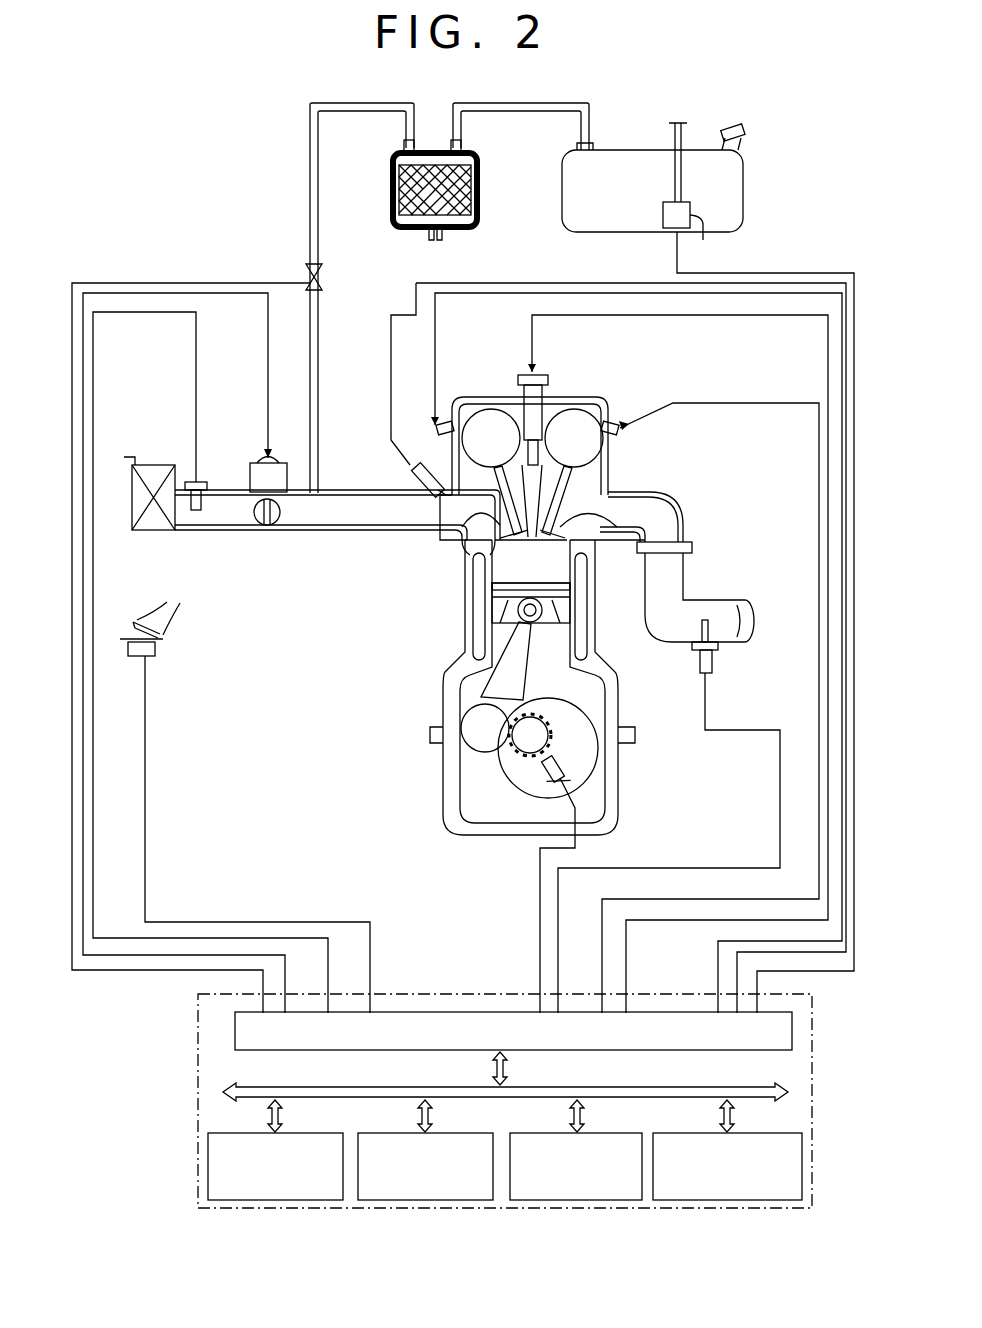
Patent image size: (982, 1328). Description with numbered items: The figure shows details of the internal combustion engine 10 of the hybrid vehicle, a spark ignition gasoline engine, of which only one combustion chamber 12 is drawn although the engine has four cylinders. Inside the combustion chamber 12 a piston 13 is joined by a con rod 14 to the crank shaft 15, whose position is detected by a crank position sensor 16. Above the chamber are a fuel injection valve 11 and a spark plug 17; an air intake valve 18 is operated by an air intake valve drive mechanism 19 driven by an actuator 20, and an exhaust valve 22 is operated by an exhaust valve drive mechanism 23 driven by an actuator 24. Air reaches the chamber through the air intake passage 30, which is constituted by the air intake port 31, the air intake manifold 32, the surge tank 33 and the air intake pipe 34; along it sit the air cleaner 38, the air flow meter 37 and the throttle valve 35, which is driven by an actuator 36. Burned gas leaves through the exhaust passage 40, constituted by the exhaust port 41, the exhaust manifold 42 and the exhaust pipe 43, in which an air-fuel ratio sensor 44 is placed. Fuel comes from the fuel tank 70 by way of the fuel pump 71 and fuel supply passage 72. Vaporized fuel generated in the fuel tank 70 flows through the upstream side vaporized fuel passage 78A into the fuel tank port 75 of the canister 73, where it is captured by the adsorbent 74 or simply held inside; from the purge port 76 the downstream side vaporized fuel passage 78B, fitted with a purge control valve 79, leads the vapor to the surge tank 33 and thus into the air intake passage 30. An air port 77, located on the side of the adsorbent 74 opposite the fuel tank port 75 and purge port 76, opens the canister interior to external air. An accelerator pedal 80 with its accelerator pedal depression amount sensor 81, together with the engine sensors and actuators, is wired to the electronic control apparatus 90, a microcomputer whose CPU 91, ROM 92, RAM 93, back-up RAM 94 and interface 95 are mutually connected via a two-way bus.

The internal combustion engine 10 is at (660, 748).
The fuel injection valve 11 is at (415, 478).
The combustion chamber 12 is at (521, 573).
The piston 13 is at (565, 610).
The con rod 14 is at (530, 657).
The crank shaft 15 is at (533, 735).
The crank position sensor 16 is at (563, 775).
The spark plug 17 is at (585, 490).
The air intake valve 18 is at (470, 555).
The air intake valve drive mechanism 19 is at (518, 385).
The actuator for driving the air intake valve drive mechanism 20 is at (445, 433).
The exhaust valve 22 is at (552, 555).
The exhaust valve drive mechanism 23 is at (572, 400).
The actuator for driving the exhaust valve drive mechanism 24 is at (614, 432).
The air intake passage 30 is at (384, 402).
The air intake port 31 is at (465, 522).
The air intake manifold 32 is at (400, 530).
The surge tank 33 is at (340, 530).
The air intake pipe 34 is at (190, 530).
The throttle valve 35 is at (280, 528).
The actuator for driving a throttle valve 36 is at (260, 460).
The air flow meter 37 is at (199, 482).
The air cleaner 38 is at (150, 530).
The exhaust passage 40 is at (738, 480).
The exhaust port 41 is at (608, 527).
The exhaust manifold 42 is at (680, 512).
The exhaust pipe 43 is at (690, 582).
The air-fuel ratio sensor 44 is at (712, 668).
The fuel tank 70 is at (743, 197).
The fuel pump 71 is at (703, 241).
The fuel supply passage 72 is at (668, 139).
The canister 73 is at (478, 225).
The adsorbent 74 is at (478, 190).
The fuel tank port 75 is at (463, 150).
The purge port 76 is at (404, 148).
The air port 77 is at (430, 236).
The upstream side vaporized fuel passage 78A is at (589, 108).
The downstream side vaporized fuel passage 78B is at (310, 174).
The purge control valve 79 is at (308, 276).
The accelerator pedal 80 is at (135, 622).
The accelerator pedal depression amount sensor 81 is at (158, 650).
The electronic control apparatus 90 is at (198, 1182).
The microprocessor (CPU) 91 is at (312, 1133).
The read-only memory (ROM) 92 is at (464, 1133).
The random access memory (RAM) 93 is at (612, 1133).
The back-up RAM 94 is at (762, 1133).
The interface 95 is at (745, 1050).